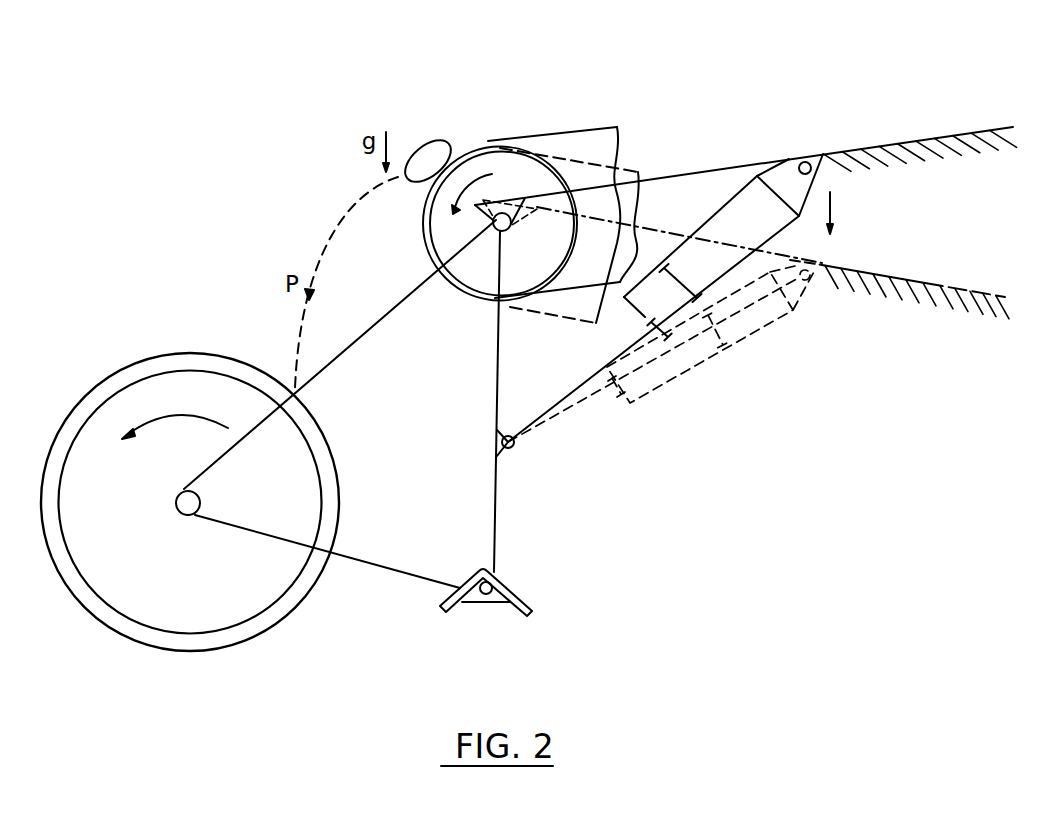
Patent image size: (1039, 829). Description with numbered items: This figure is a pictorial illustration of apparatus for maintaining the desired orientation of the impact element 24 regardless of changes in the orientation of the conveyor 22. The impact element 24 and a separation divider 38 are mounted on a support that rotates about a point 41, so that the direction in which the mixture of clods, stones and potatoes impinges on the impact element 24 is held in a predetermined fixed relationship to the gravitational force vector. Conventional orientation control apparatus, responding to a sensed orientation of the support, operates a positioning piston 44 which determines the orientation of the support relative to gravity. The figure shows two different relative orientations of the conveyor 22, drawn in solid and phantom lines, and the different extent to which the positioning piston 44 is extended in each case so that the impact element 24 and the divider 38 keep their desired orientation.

The conveyor 22 is at (883, 146).
The impact element 24 is at (150, 356).
The separation divider 38 is at (512, 588).
The point 41 is at (497, 207).
The positioning piston 44 is at (670, 372).